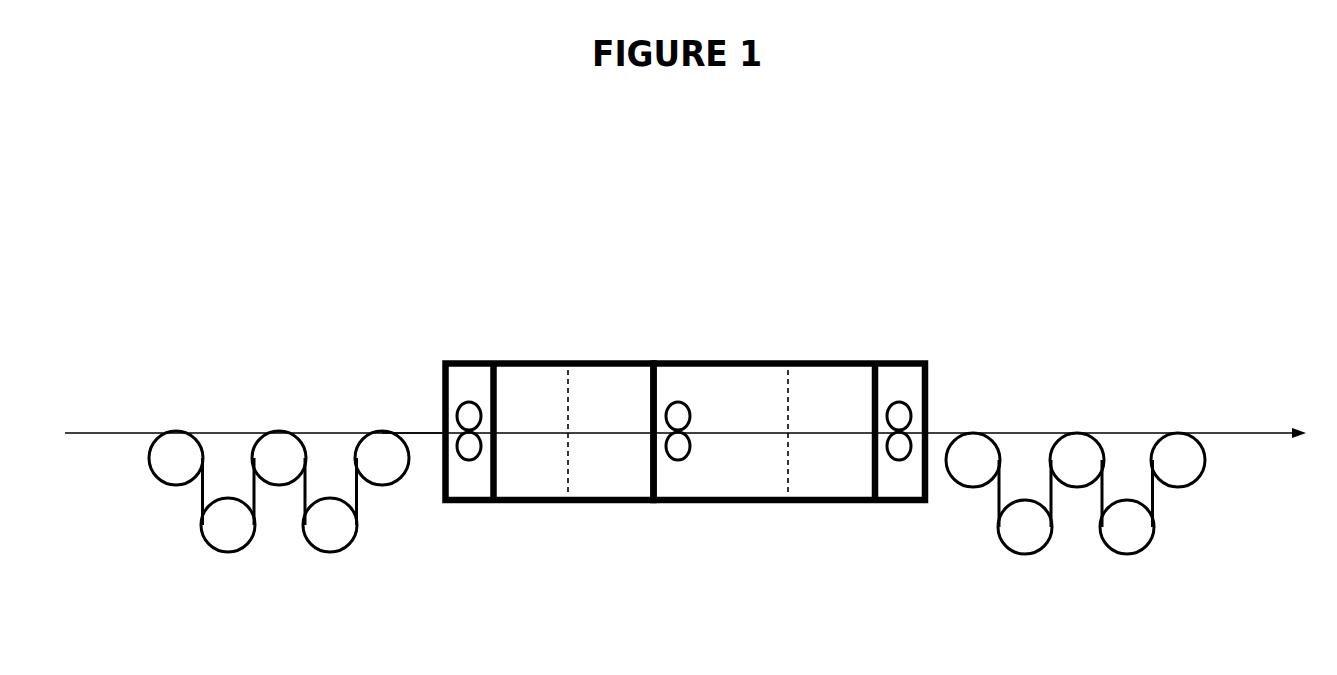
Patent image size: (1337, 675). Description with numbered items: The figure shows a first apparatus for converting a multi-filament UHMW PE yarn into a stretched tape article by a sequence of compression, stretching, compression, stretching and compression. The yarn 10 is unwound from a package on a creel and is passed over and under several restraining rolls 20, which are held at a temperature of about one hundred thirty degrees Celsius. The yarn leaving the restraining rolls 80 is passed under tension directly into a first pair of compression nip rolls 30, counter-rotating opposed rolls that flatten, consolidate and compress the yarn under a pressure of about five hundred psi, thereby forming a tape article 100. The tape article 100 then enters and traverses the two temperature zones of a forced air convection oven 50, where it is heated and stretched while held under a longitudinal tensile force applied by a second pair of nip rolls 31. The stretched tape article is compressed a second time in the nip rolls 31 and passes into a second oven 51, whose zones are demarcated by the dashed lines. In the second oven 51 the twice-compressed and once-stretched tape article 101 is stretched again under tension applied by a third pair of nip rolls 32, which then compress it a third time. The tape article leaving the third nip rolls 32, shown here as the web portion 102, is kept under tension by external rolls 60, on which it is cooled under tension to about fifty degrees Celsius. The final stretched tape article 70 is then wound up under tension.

The multi-filament UHMW PE yarn 10 is at (120, 437).
The restraining rolls 20 is at (198, 445).
The yarn leaving the restraining rolls 80 is at (413, 427).
The first pair of compression nip rolls 30 is at (470, 460).
The second pair of nip rolls 31 is at (678, 460).
The third pair of nip rolls 32 is at (900, 462).
The forced air convection oven 50 is at (610, 360).
The second oven 51 is at (778, 362).
The tape article 100 is at (533, 430).
The twice-compressed and once-stretched tape article 101 is at (818, 433).
The web exiting housing 102 is at (952, 435).
The external rolls 60 is at (1157, 440).
The final tape article 70 is at (1237, 432).